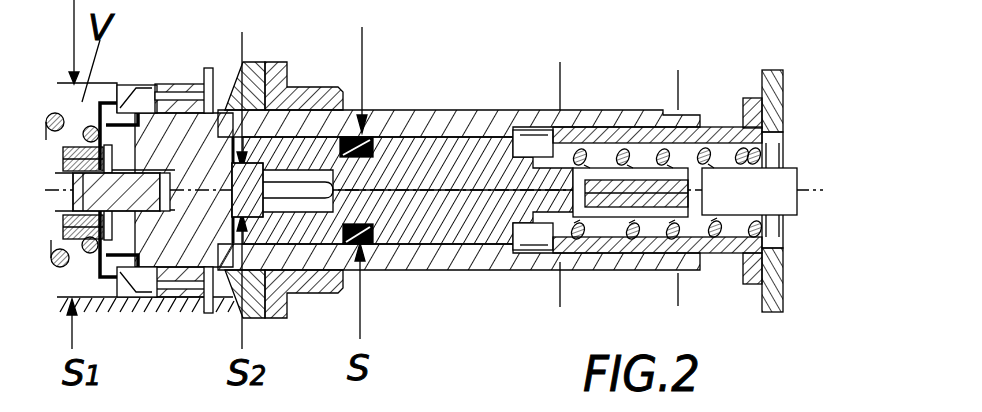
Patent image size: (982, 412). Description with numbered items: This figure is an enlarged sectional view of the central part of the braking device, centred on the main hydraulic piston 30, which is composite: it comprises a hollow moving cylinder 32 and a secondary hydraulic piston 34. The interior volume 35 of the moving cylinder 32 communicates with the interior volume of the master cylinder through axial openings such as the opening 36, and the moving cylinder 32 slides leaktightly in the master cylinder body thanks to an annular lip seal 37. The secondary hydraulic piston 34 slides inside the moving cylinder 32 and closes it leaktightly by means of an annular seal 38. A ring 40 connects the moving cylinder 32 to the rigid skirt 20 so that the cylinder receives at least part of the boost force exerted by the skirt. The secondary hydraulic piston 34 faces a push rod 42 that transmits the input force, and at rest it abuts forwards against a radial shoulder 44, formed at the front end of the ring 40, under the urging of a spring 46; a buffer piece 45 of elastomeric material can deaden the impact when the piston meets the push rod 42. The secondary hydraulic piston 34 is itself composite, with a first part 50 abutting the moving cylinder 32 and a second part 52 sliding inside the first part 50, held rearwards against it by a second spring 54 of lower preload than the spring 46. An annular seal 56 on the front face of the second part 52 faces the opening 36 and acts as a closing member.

The rigid skirt 20 is at (785, 92).
The main hydraulic piston 30 is at (459, 217).
The moving cylinder 32 is at (422, 123).
The secondary hydraulic piston 34 is at (472, 262).
The interior volume 35 is at (221, 67).
The opening 36 is at (147, 133).
The annular lip seal 37 is at (145, 276).
The annular seal 38 is at (375, 135).
The ring 40 is at (746, 97).
The push rod 42 is at (778, 182).
The radial shoulder 44 is at (533, 260).
The buffer piece 45 is at (627, 256).
The spring 46 is at (593, 157).
The first part 50 is at (540, 143).
The second part 52 is at (450, 170).
The second spring 54 is at (310, 110).
The annular seal 56 is at (183, 278).